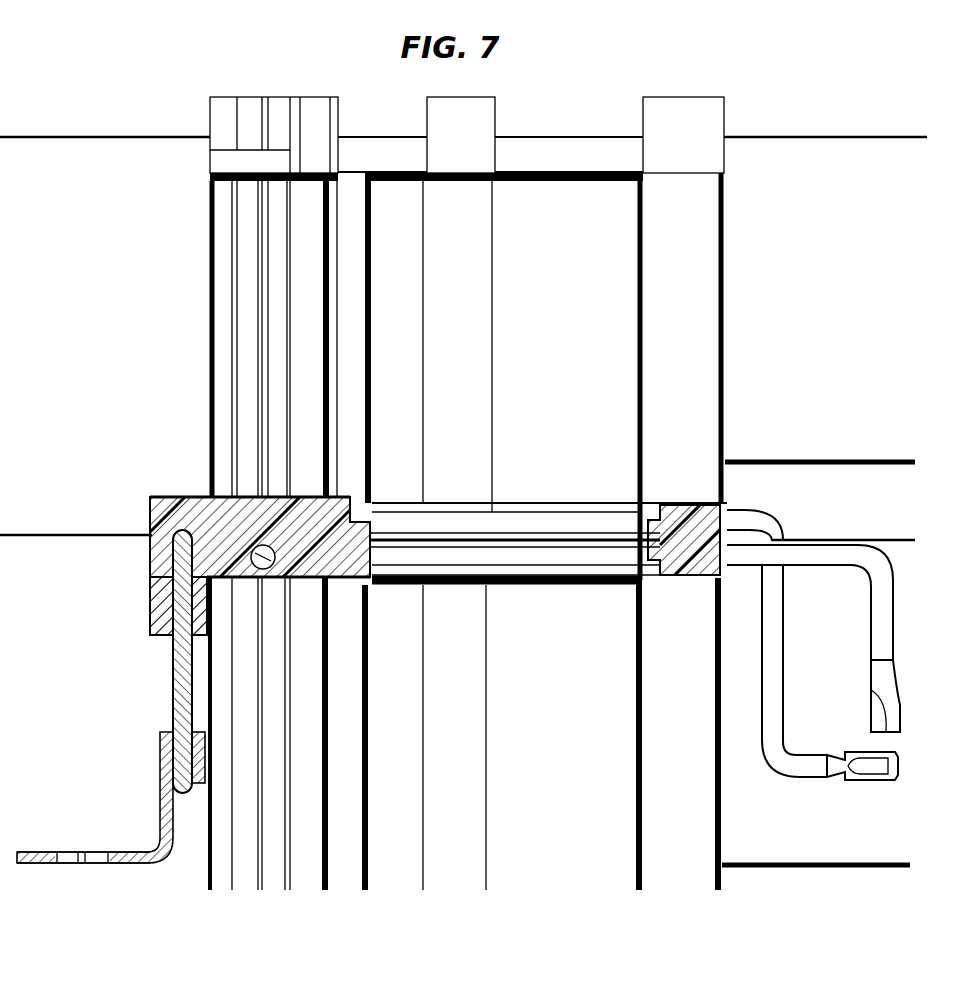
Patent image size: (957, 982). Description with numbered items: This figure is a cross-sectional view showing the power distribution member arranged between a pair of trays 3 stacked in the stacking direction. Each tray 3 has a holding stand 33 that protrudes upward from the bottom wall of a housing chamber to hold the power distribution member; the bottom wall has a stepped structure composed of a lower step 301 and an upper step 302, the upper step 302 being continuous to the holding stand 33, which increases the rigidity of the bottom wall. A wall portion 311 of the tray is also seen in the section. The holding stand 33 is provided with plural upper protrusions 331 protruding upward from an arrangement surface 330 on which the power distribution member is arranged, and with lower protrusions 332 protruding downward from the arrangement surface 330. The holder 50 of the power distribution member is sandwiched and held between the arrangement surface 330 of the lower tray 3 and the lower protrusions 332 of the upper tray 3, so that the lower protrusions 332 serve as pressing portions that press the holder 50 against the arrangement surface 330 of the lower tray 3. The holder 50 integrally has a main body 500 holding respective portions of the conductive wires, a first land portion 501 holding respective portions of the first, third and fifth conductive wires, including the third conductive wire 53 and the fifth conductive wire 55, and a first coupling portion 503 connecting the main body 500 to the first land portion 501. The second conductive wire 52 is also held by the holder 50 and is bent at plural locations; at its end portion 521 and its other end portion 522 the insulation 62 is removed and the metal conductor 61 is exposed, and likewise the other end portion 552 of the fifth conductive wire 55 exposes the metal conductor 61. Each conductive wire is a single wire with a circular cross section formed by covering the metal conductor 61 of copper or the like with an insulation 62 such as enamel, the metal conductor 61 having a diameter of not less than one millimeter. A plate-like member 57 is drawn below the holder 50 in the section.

The tray 3 is at (873, 135).
The first plate portion 311 is at (117, 147).
The holding stand 33 is at (727, 247).
The arrangement surface 330 is at (572, 170).
The upper protrusions 331 is at (313, 104).
The lower protrusions 332 is at (353, 377).
The lower step 301 is at (50, 532).
The upper step 302 is at (820, 460).
The main body 500 is at (233, 500).
The first land portion 501 is at (708, 532).
The first coupling portion 503 is at (573, 538).
The holder 50 is at (155, 600).
The third conductive wire 53 is at (237, 560).
The second conductive wire 52 is at (777, 653).
The end portion 521 is at (182, 762).
The other end portion 522 is at (865, 767).
The fifth conductive wire 55 is at (882, 625).
The other end portion 552 is at (882, 712).
The support plate 57 is at (30, 848).
The metal conductor 61 is at (173, 687).
The insulation 62 is at (172, 657).